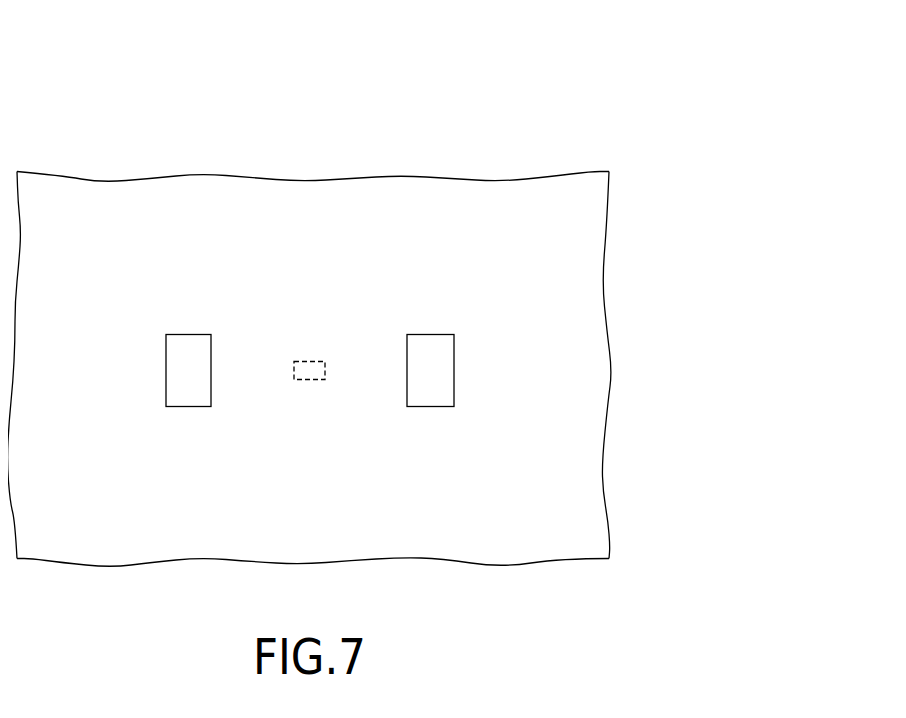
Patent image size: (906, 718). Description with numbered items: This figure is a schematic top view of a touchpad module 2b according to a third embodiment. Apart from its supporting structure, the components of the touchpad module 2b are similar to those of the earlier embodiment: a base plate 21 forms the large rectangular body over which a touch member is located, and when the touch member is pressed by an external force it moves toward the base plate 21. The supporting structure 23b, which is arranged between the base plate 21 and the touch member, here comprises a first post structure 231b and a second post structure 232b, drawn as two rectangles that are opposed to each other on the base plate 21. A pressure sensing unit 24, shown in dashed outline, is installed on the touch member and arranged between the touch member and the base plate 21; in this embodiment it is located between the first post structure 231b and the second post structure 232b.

The touchpad module 2b is at (578, 111).
The base plate 21 is at (416, 185).
The supporting structure 23b is at (90, 80).
The first post structure 231b is at (188, 345).
The second post structure 232b is at (430, 345).
The pressure sensing unit 24 is at (310, 362).